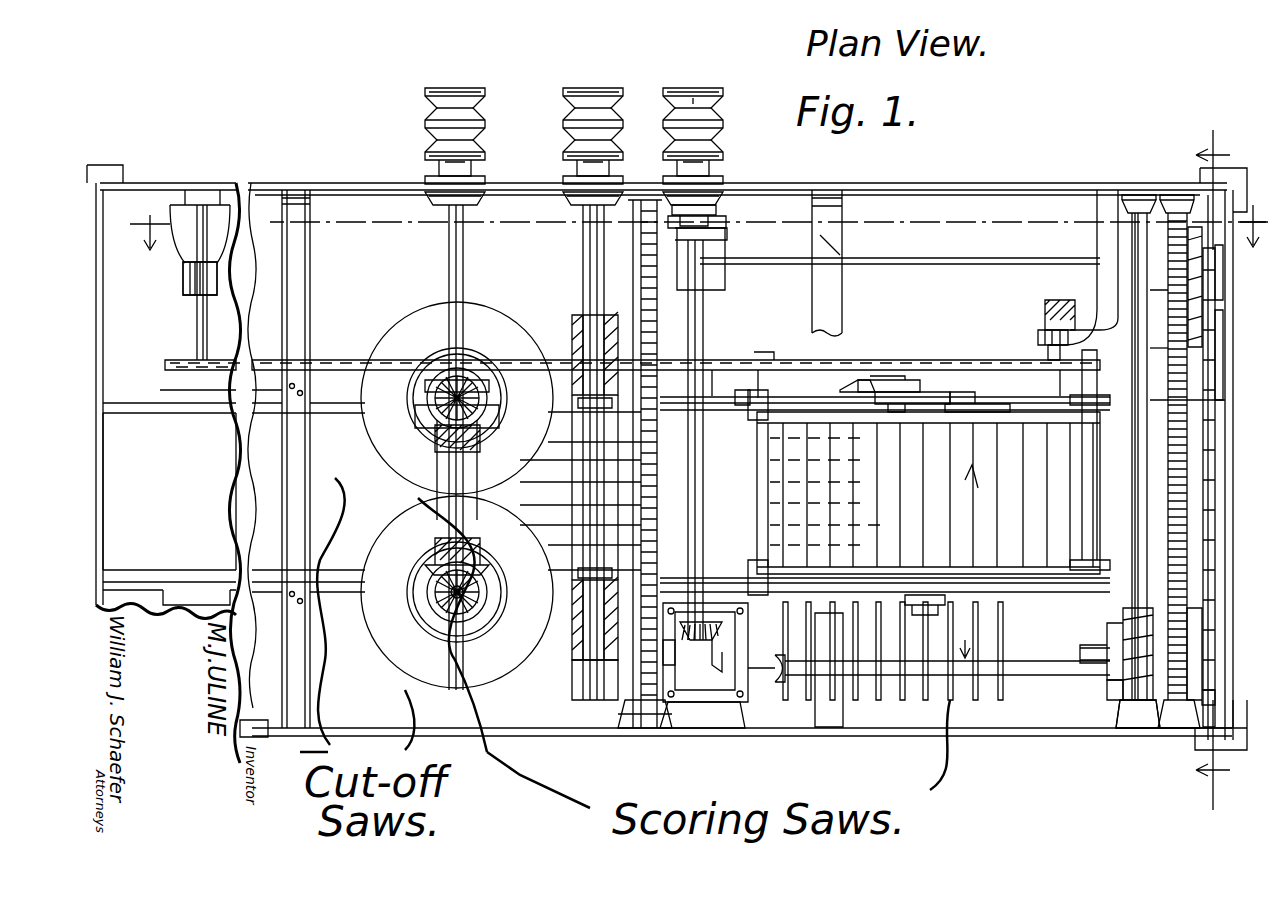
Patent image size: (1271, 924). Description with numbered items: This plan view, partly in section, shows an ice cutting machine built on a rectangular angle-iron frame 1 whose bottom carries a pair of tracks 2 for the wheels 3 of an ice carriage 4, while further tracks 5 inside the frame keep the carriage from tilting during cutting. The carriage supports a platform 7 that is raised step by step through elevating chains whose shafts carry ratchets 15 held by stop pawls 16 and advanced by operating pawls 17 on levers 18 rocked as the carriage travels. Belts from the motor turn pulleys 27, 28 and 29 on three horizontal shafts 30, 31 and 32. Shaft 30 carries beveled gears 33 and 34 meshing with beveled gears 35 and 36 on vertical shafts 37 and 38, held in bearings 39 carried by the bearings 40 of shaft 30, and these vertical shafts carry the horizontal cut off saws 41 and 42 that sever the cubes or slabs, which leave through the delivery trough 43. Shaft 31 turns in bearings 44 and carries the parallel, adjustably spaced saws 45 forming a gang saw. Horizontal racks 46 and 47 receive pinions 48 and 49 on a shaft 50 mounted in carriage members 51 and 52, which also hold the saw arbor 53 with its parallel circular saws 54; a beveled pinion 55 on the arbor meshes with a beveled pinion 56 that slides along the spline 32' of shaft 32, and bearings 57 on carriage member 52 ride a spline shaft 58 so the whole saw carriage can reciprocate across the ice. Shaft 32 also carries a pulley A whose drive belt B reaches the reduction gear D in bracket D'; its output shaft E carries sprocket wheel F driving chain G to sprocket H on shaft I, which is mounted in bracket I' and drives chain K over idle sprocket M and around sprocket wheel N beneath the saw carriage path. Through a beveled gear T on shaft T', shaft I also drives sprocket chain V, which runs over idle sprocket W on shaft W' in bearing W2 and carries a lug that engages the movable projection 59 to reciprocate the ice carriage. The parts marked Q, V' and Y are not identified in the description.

The frame 1 is at (667, 459).
The tracks 2 is at (692, 394).
The wheels 3 is at (974, 474).
The ice carriage 4 is at (780, 422).
The tracks 5 is at (302, 394).
The platform 7 is at (757, 488).
The ratchets 15 is at (898, 398).
The stop pawls 16 is at (926, 406).
The operating pawls 17 is at (884, 378).
The levers 18 is at (848, 388).
The pulley 27 is at (458, 88).
The pulley 28 is at (595, 88).
The pulley 29 is at (696, 88).
The shaft 30 is at (449, 280).
The shaft 31 is at (583, 280).
The shaft 32 is at (735, 440).
The spline 32' is at (739, 440).
The beveled gear 33 is at (430, 410).
The beveled gear 34 is at (438, 568).
The beveled gear 35 is at (487, 400).
The beveled gear 36 is at (448, 616).
The vertically disposed shaft 37 is at (462, 388).
The vertically disposed shaft 38 is at (455, 596).
The bearings 39 is at (438, 432).
The bearings 40 is at (440, 550).
The cut off saw 41 is at (428, 458).
The cut off saw 42 is at (403, 660).
The delivery trough 43 is at (169, 509).
The bearings 44 is at (572, 322).
The saws 45 is at (524, 514).
The rack 46 is at (657, 446).
The rack 47 is at (1138, 468).
The pinion 48 is at (612, 672).
The pinion 49 is at (1142, 715).
The shaft 50 is at (1100, 660).
The carriage member 51 is at (734, 705).
The carriage member 52 is at (1110, 626).
The saw arbor 53 is at (766, 676).
The circular saws 54 is at (952, 700).
The beveled pinion 55 is at (690, 712).
The beveled pinion 56 is at (705, 620).
The bearings 57 is at (1116, 690).
The spline shaft 58 is at (1132, 444).
The movable projection 59 is at (766, 368).
The pulley A is at (716, 205).
The drive belt B is at (716, 215).
The reduction gear D is at (723, 253).
The bracket D' is at (624, 237).
The shaft E is at (900, 246).
The sprocket wheel F is at (1182, 214).
The drive chain G is at (1187, 338).
The sprocket H is at (1158, 349).
The shaft I is at (1062, 300).
The bracket I' is at (1078, 267).
The drive sprocket chain K is at (1215, 442).
The idle sprocket M is at (1215, 284).
The sprocket wheel N is at (1210, 690).
The frame foot Q is at (1212, 708).
The beveled gear T is at (1022, 318).
The shaft T' is at (1018, 337).
The drive sprocket chain V is at (728, 360).
The stop V' is at (1052, 381).
The idle sprocket W is at (171, 377).
The shaft W' is at (180, 275).
The bearing W2 is at (200, 278).
The post Y is at (1097, 386).